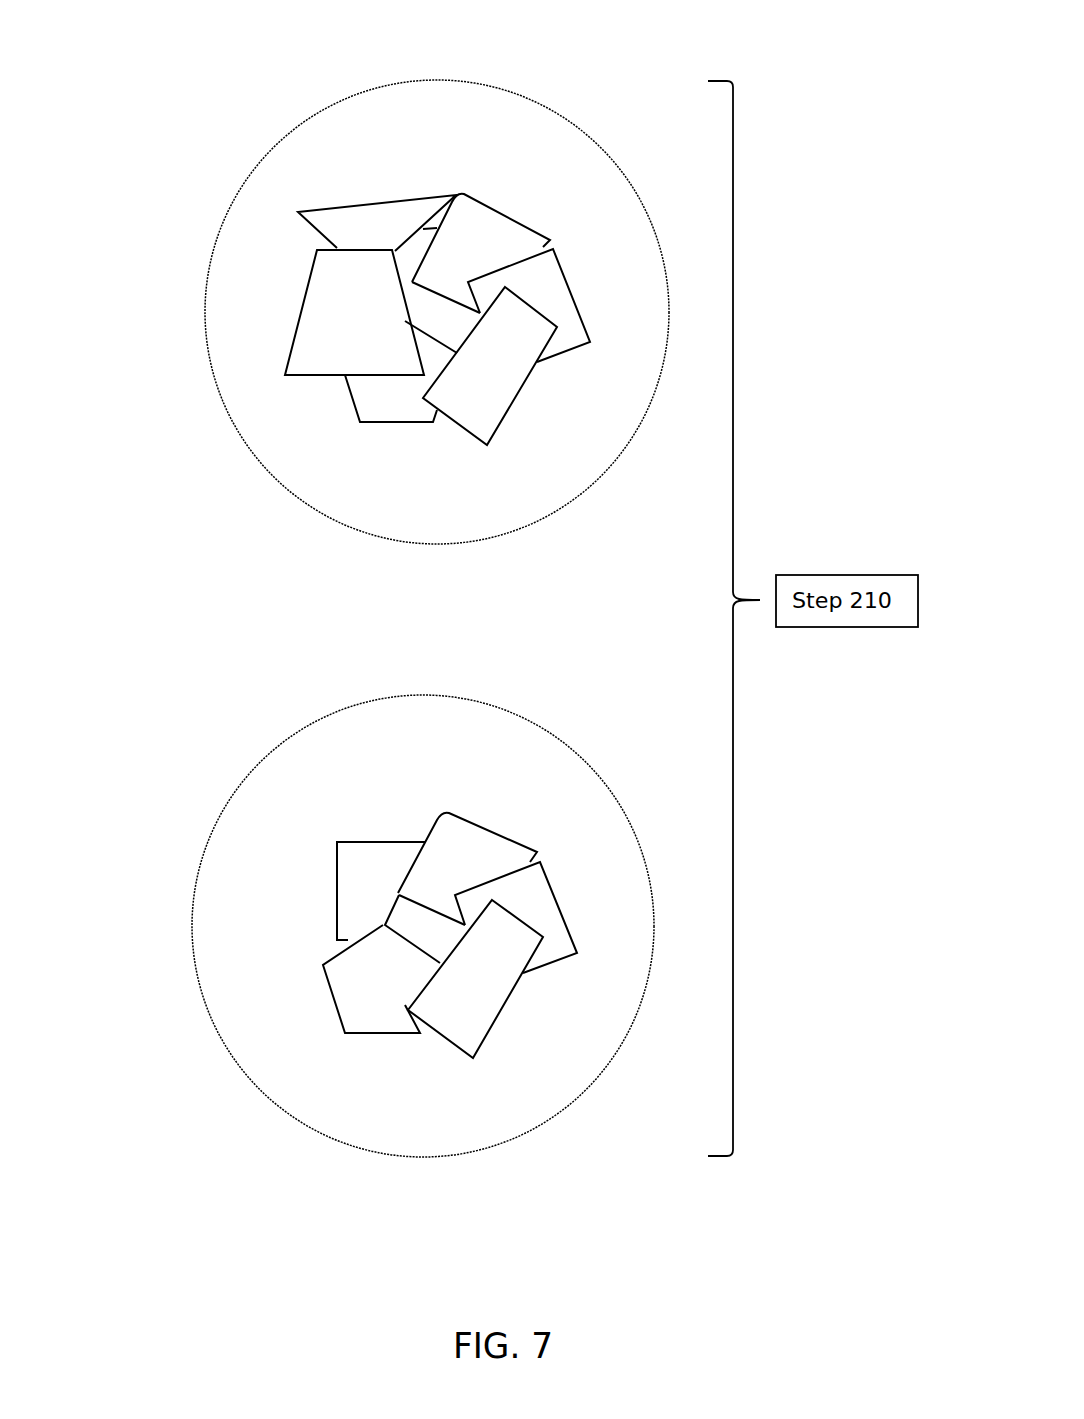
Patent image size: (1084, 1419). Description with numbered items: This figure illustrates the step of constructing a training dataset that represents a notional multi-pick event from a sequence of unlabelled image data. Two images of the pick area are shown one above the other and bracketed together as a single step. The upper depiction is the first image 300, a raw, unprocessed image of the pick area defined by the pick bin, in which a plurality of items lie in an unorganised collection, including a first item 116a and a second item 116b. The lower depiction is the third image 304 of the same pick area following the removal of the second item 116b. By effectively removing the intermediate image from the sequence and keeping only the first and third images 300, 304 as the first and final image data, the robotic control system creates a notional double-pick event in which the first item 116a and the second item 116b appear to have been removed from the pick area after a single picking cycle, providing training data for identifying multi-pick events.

The first image 300 is at (248, 118).
The third image 304 is at (178, 846).
The first item 116a is at (307, 278).
The second item 116b is at (378, 198).